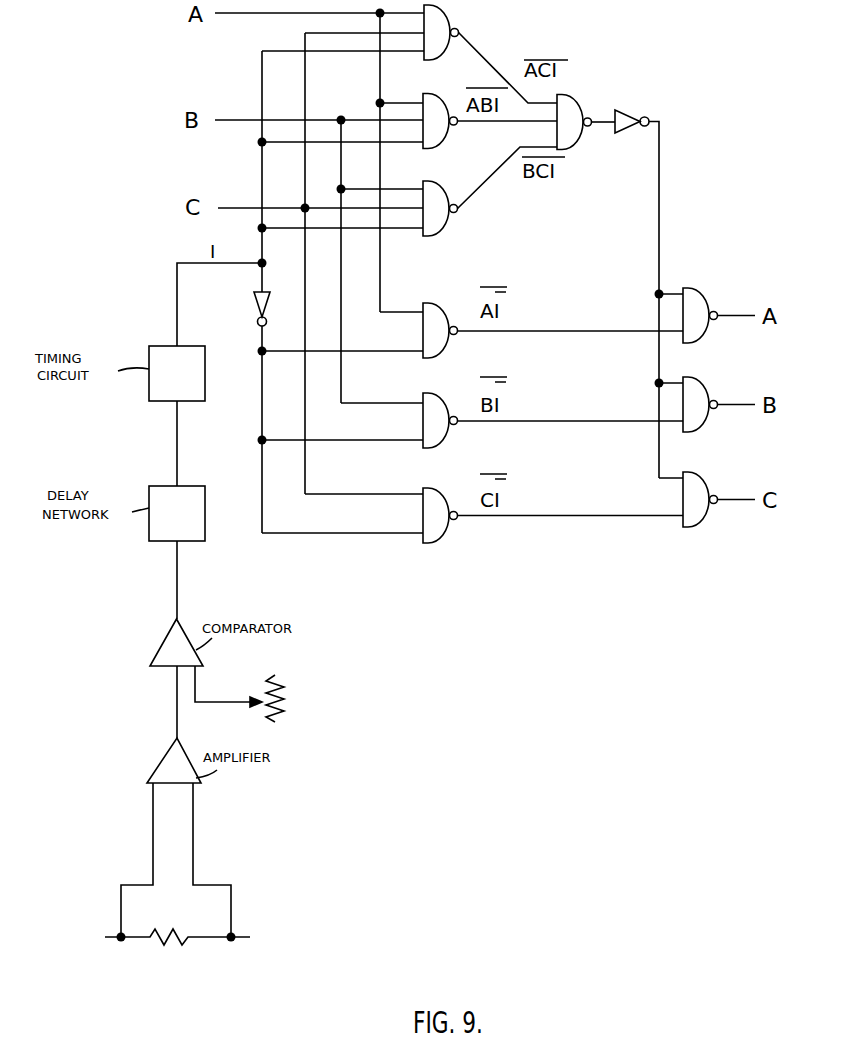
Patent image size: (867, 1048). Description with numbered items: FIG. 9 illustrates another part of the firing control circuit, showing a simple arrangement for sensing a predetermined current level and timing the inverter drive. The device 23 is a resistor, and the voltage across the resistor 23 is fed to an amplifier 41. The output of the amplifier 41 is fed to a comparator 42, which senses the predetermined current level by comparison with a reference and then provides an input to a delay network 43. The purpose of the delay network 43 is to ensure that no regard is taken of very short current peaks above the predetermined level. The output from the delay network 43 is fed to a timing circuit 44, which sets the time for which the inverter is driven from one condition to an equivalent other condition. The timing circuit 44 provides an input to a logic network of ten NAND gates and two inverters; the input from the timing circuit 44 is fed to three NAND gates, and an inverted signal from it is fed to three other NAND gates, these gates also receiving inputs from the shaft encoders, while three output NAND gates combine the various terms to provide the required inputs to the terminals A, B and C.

The timing circuit 44 is at (149, 388).
The delay network 43 is at (149, 525).
The comparator 42 is at (150, 655).
The amplifier 41 is at (154, 760).
The resistor 23 is at (185, 945).